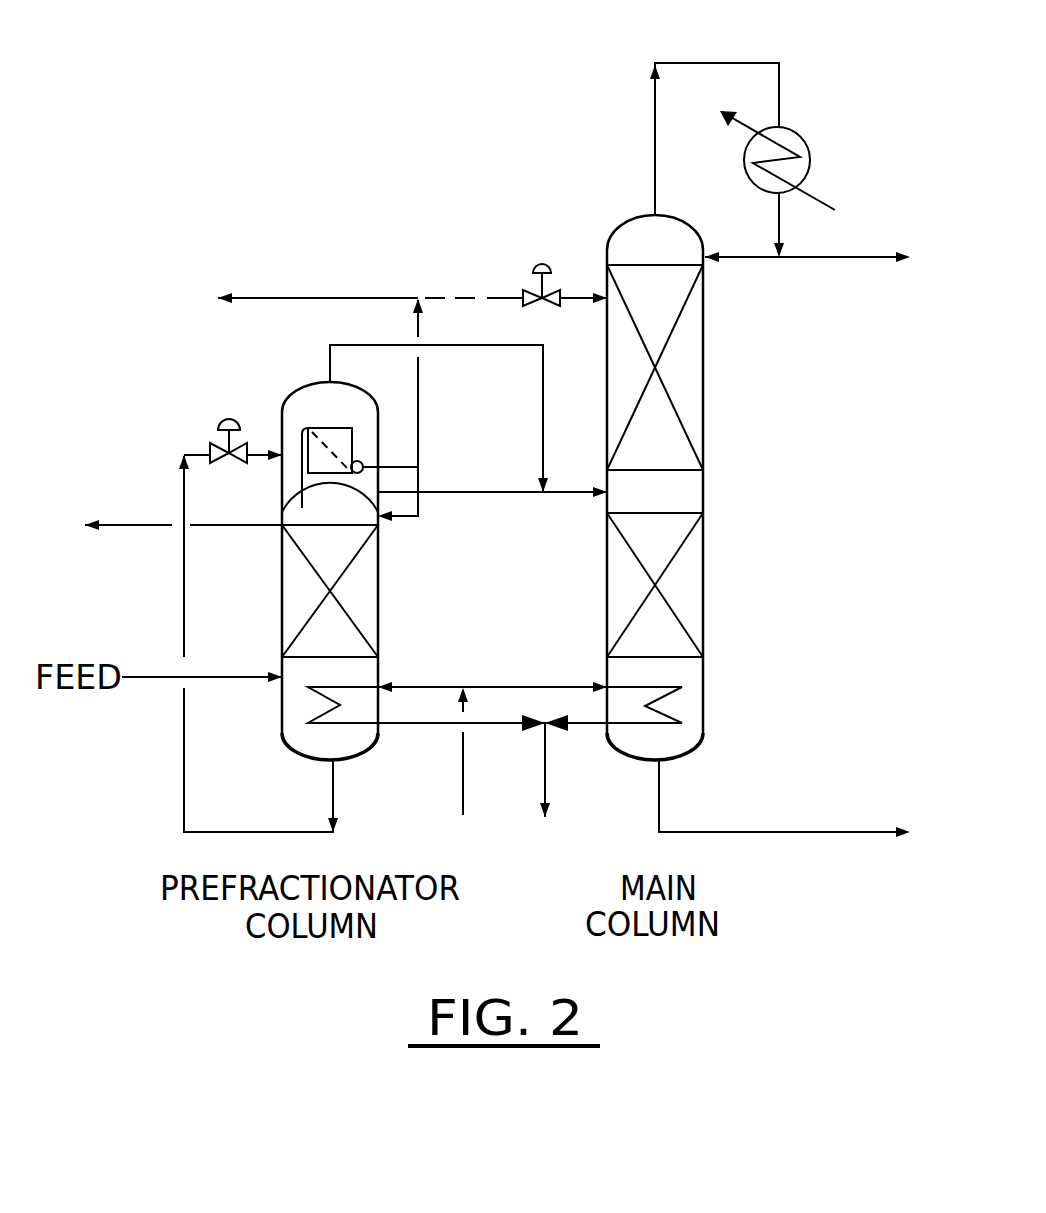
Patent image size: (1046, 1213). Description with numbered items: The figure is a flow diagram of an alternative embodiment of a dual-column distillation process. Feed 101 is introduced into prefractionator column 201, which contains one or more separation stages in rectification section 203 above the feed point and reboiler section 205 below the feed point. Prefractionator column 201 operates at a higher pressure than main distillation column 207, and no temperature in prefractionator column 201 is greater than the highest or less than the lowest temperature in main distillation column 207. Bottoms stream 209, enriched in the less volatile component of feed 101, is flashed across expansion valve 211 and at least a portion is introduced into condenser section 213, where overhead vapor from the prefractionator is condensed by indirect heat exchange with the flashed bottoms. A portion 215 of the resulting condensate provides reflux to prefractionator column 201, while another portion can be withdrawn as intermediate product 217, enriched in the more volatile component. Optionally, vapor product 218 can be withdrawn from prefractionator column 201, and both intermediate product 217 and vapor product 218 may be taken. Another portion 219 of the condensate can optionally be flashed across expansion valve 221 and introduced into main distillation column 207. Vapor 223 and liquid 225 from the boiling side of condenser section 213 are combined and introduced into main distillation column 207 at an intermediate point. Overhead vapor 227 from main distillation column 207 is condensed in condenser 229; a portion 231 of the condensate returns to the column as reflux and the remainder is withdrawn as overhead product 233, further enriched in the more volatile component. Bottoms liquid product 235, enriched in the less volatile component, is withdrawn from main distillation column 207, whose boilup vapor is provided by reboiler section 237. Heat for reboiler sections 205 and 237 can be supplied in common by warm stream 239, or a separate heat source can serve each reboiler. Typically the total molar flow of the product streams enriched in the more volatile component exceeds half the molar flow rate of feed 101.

The feed 101 is at (222, 678).
The prefractionator column 201 is at (400, 628).
The rectification section 203 is at (300, 598).
The reboiler section 205 is at (308, 705).
The main distillation column 207 is at (748, 498).
The bottoms stream 209 is at (184, 780).
The expansion valve 211 is at (218, 422).
The condenser section 213 is at (320, 428).
The reflux portion of condensate 215 is at (418, 520).
The intermediate product 217 is at (310, 298).
The vapor product 218 is at (152, 527).
The condensate portion 219 is at (470, 298).
The expansion valve 221 is at (538, 265).
The vapor 223 is at (503, 345).
The liquid 225 is at (493, 492).
The overhead vapor 227 is at (714, 63).
The condenser 229 is at (792, 125).
The reflux portion 231 is at (748, 262).
The overhead product 233 is at (838, 262).
The bottoms liquid product 235 is at (762, 832).
The reboiler section 237 is at (680, 705).
The warm stream 239 is at (463, 786).